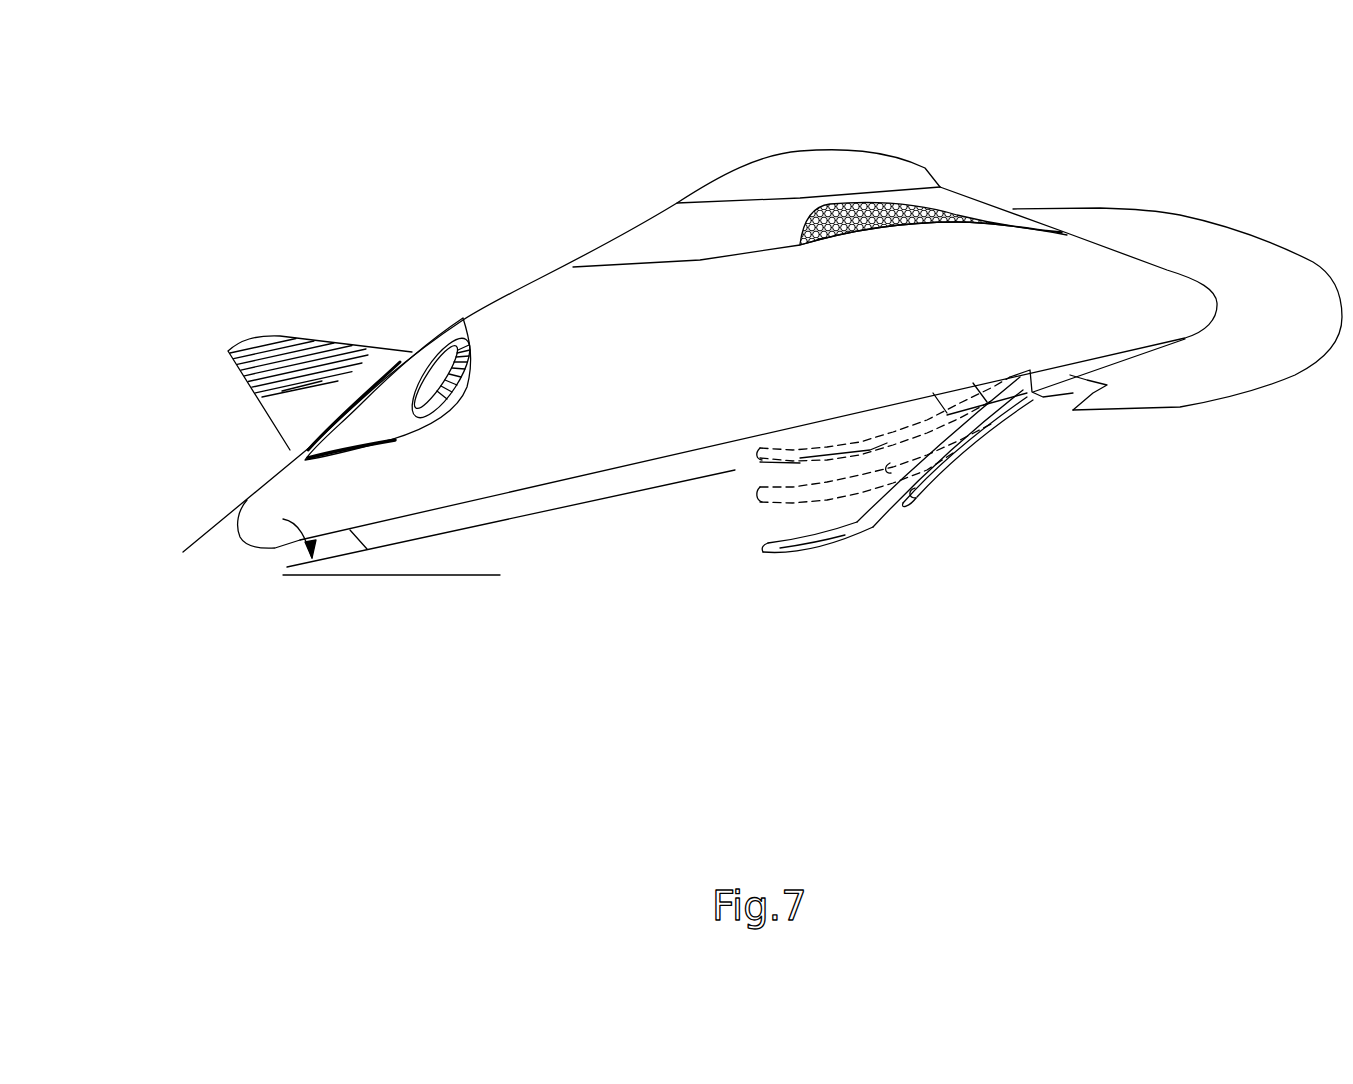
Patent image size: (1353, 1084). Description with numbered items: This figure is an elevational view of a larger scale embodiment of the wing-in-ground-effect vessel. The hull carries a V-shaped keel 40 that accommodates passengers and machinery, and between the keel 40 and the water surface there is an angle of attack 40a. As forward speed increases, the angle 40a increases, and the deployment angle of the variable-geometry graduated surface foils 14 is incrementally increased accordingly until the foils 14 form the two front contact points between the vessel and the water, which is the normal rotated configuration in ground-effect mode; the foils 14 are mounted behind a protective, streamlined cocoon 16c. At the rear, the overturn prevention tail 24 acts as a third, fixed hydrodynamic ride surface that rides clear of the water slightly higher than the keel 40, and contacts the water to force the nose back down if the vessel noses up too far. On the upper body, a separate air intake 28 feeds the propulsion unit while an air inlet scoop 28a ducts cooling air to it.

The variable-geometry graduated surface foil 14 is at (903, 557).
The protection cocoon 16c is at (1073, 410).
The overturn prevention tail 24 is at (243, 414).
The air intake for the propulsion unit 28 is at (953, 214).
The air inlet scoop 28a is at (458, 340).
The keel 40 is at (563, 485).
The angle of attack 40a is at (315, 577).